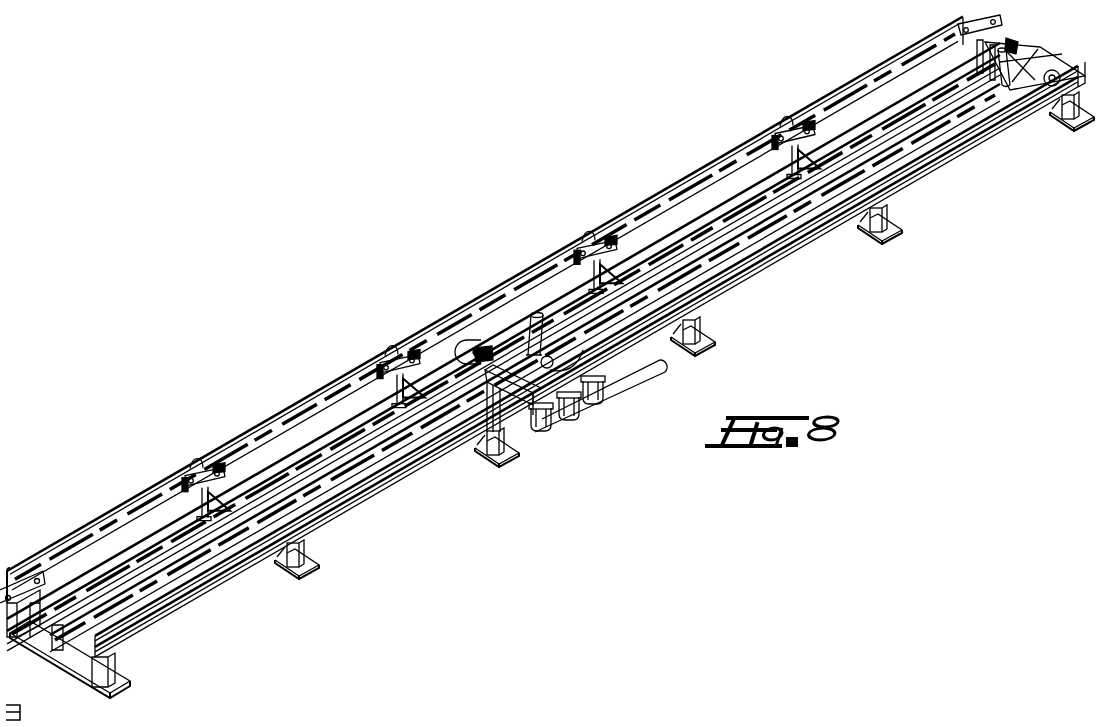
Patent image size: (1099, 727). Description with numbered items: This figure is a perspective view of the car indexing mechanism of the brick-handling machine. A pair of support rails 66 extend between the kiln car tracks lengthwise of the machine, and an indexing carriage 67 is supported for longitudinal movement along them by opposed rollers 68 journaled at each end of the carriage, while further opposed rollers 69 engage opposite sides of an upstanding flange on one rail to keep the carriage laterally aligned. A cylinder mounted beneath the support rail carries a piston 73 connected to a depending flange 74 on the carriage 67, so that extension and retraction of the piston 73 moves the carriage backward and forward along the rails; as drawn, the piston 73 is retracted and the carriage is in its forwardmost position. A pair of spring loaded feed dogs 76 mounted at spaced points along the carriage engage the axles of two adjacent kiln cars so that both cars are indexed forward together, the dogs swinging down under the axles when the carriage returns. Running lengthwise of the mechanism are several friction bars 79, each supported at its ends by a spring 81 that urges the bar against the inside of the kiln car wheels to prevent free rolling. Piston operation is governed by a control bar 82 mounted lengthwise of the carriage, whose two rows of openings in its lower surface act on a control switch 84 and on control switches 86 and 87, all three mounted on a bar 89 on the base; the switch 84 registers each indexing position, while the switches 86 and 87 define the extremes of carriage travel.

The support rails 66 is at (100, 583).
The indexing carriage 67 is at (499, 350).
The opposed rollers 68 is at (583, 358).
The opposed rollers 69 is at (474, 343).
The piston 73 is at (483, 449).
The depending flange 74 is at (492, 412).
The spring loaded feed dogs 76 is at (540, 322).
The friction bars 79 is at (137, 500).
The spring 81 is at (193, 470).
The control bar 82 is at (790, 257).
The control switch 84 is at (540, 433).
The control switch 86 is at (570, 422).
The control switch 87 is at (602, 404).
The bar 89 is at (667, 361).